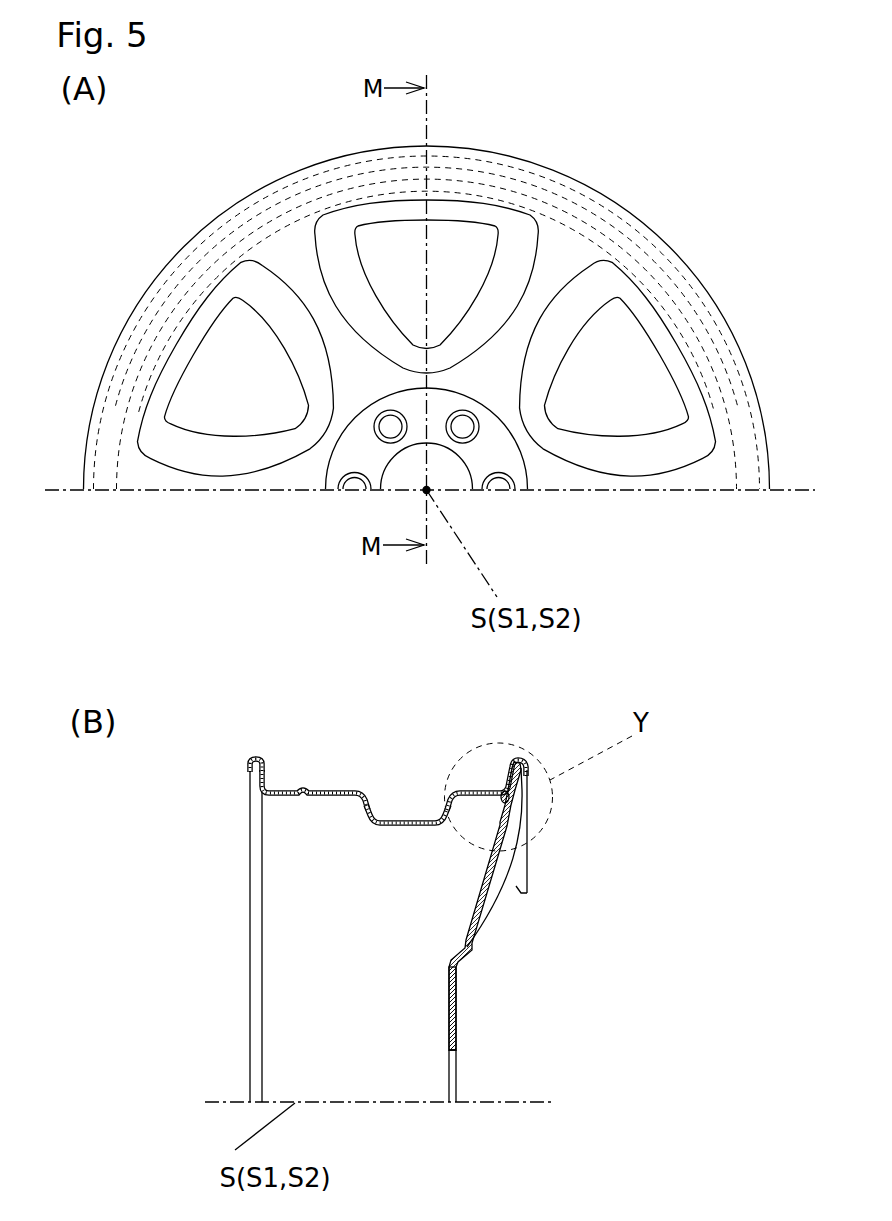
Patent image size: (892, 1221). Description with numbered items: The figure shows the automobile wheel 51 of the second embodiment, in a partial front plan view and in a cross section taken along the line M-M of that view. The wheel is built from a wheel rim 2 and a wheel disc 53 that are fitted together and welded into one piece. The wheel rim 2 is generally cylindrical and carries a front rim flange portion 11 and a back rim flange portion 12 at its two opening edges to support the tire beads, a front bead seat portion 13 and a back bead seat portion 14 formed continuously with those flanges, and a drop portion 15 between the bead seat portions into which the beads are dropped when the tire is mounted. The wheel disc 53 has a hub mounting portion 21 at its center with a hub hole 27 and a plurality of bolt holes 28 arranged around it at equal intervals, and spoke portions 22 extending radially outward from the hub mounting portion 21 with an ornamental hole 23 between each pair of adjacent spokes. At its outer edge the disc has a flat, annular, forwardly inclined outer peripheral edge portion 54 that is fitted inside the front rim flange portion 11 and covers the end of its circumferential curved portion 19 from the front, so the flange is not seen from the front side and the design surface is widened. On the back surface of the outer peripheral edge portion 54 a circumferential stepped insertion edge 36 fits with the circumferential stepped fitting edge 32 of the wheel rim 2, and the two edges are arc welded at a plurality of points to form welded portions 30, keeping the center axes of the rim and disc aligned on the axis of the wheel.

In FIG. 5B, the wheel rim 2 is at (277, 930).
In FIG. 5A, the front rim flange portion 11 is at (180, 247).
In FIG. 5B, the front rim flange portion 11 is at (515, 777).
In FIG. 5B, the back rim flange portion 12 is at (255, 758).
In FIG. 5A, the front bead seat portion 13 is at (95, 415).
In FIG. 5B, the back bead seat portion 14 is at (278, 790).
In FIG. 5B, the drop portion 15 is at (383, 818).
In FIG. 5B, the circumferential curved portion 19 is at (528, 757).
In FIG. 5A, the hub mounting portion 21 is at (373, 463).
In FIG. 5B, the hub mounting portion 21 is at (458, 1010).
In FIG. 5A, the spoke portions 22 is at (303, 272).
In FIG. 5B, the spoke portions 22 is at (497, 895).
In FIG. 5A, the ornamental hole 23 is at (448, 253).
In FIG. 5B, the ornamental hole 23 is at (473, 907).
In FIG. 5A, the hub hole 27 is at (450, 472).
In FIG. 5B, the hub hole 27 is at (453, 1078).
In FIG. 5A, the bolt holes 28 is at (388, 427).
In FIG. 5A, the welded portions 30 is at (132, 310).
In FIG. 5B, the welded portions 30 is at (505, 797).
In FIG. 5B, the circumferential stepped fitting edge 32 is at (505, 795).
In FIG. 5B, the circumferential stepped insertion edge 36 is at (515, 797).
In FIG. 5A, the automobile wheel 51 is at (408, 289).
In FIG. 5B, the automobile wheel 51 is at (467, 932).
In FIG. 5A, the wheel disc 53 is at (310, 218).
In FIG. 5B, the wheel disc 53 is at (457, 1033).
In FIG. 5A, the outer peripheral edge portion 54 is at (595, 217).
In FIG. 5B, the outer peripheral edge portion 54 is at (520, 787).